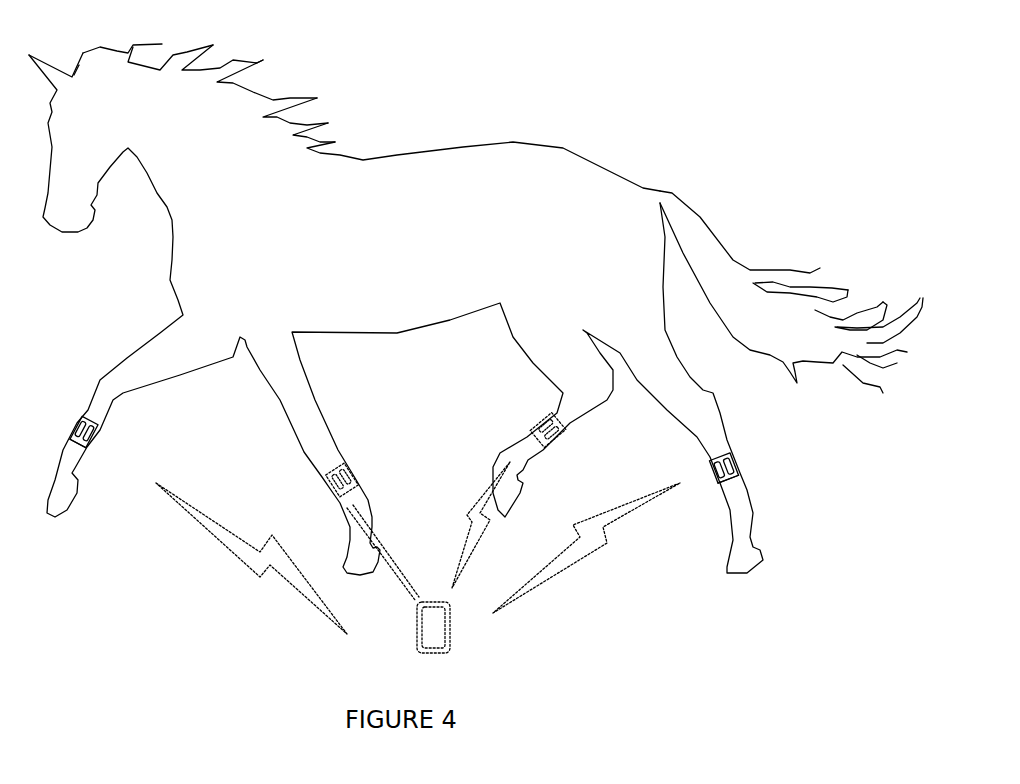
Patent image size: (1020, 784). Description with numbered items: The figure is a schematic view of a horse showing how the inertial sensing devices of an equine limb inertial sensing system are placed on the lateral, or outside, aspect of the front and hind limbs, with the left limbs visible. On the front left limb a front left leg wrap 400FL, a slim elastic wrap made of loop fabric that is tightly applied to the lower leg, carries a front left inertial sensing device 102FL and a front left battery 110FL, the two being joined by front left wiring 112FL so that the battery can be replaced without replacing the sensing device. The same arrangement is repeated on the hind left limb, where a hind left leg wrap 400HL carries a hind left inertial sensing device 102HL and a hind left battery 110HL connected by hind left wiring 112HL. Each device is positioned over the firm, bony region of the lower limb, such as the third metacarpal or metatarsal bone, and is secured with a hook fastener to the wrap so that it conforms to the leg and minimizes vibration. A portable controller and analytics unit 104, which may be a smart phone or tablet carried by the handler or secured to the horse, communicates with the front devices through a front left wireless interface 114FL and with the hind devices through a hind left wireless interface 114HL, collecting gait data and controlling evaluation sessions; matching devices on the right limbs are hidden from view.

The front left leg wrap 400FL is at (86, 409).
The front left inertial sensing device 102FL is at (70, 431).
The front left battery 110FL is at (158, 435).
The front left wiring 112FL is at (150, 469).
The front left wireless interface 114FL is at (188, 507).
The portable controller and analytics unit 104 is at (413, 633).
The hind left wireless interface 114HL is at (637, 495).
The hind left leg wrap 400HL is at (782, 440).
The hind left inertial sensing device 102HL is at (708, 460).
The hind left battery 110HL is at (800, 464).
The hind left wiring 112HL is at (805, 490).